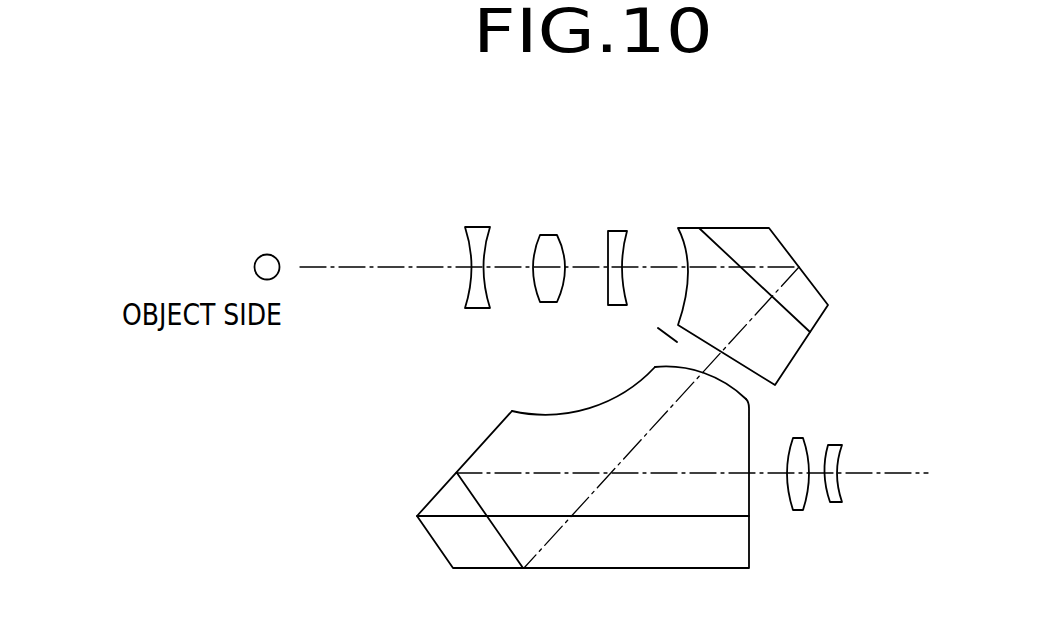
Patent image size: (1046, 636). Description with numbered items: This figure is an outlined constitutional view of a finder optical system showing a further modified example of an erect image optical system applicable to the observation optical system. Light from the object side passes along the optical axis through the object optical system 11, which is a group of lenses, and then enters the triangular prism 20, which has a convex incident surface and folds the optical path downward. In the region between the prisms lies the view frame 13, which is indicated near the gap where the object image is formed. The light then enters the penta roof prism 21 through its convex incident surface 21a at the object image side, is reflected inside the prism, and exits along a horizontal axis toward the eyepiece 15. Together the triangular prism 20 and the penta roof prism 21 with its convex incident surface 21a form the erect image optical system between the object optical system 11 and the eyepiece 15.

The object optical system 11 is at (633, 212).
The triangular prism 20 is at (707, 228).
The view frame 13 is at (765, 393).
The penta roof prism 21 is at (443, 487).
The convex incident surface 21a is at (747, 402).
The eyepiece 15 is at (875, 513).